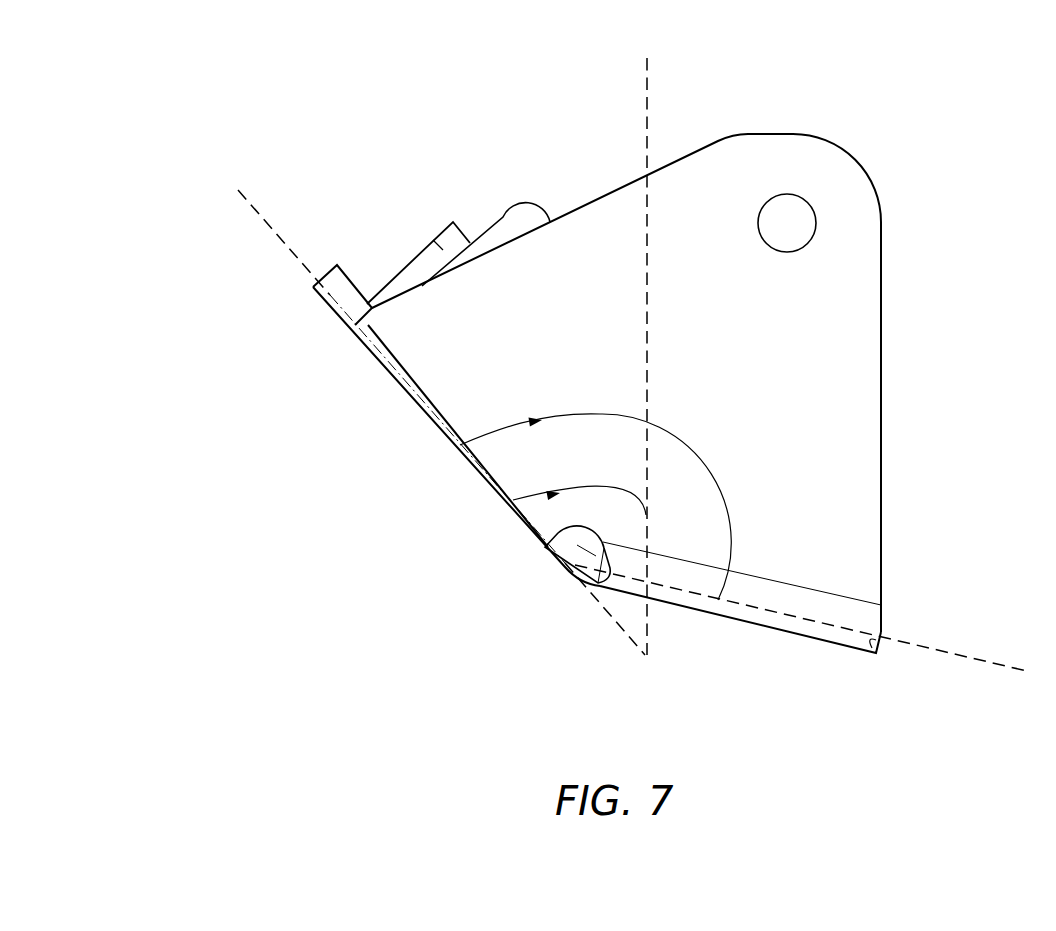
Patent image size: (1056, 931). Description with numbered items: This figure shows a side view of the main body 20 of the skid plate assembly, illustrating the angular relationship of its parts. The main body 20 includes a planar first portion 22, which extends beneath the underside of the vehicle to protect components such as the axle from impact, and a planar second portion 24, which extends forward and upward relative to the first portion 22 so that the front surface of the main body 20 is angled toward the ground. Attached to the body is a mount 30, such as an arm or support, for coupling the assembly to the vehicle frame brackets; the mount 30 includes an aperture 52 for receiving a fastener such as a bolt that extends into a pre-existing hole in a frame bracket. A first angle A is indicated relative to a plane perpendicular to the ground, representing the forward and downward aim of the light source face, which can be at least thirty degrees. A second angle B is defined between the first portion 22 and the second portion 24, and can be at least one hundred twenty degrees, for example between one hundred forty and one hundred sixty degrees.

The main body 20 is at (226, 90).
The first portion 22 is at (822, 632).
The second portion 24 is at (347, 303).
The mount 30 is at (855, 293).
The aperture 52 is at (795, 222).
The first angle A is at (513, 500).
The second angle B is at (460, 446).